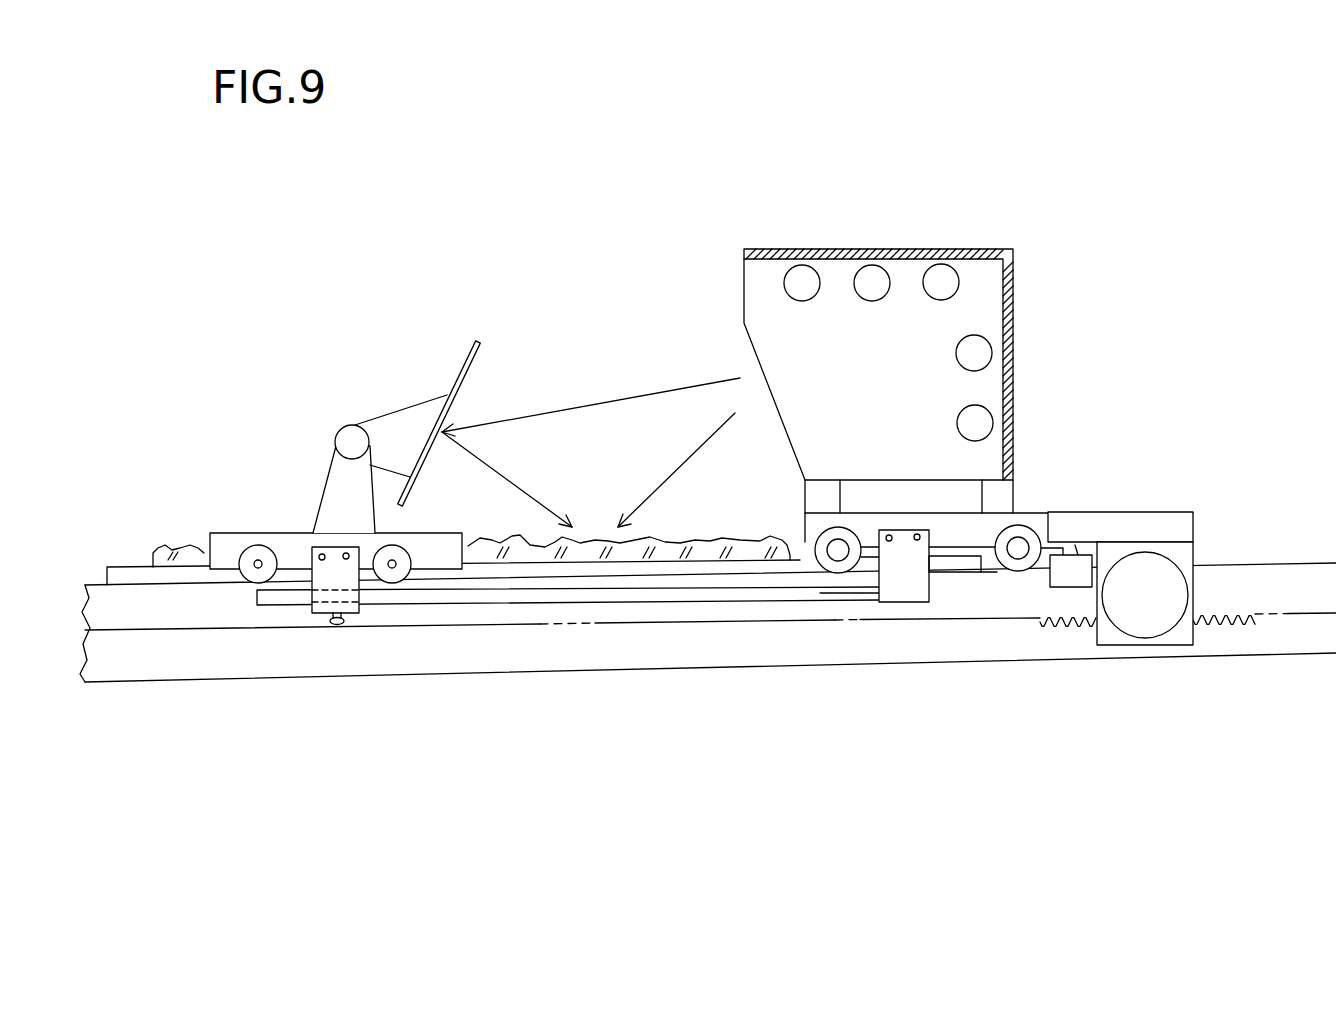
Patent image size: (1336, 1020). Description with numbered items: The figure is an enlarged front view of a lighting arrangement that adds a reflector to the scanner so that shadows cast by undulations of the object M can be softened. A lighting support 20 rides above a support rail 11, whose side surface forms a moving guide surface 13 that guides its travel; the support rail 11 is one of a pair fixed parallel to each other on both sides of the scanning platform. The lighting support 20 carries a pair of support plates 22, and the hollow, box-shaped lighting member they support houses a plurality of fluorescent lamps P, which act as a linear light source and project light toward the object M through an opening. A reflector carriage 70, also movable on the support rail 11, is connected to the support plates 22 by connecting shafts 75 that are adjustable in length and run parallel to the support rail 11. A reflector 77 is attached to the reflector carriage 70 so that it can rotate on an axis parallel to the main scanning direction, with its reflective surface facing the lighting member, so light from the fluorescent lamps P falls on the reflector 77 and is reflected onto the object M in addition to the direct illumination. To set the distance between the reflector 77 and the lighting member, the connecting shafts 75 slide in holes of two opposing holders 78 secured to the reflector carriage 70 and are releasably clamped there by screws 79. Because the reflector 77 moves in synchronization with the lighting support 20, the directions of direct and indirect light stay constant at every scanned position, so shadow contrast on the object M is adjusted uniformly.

The support rail 11 is at (1295, 578).
The moving guide surface 13 is at (1273, 637).
The lighting support 20 is at (1013, 317).
The support plate 22 is at (1138, 523).
The reflector carriage 70 is at (210, 545).
The connecting shaft 75 is at (540, 595).
The reflector 77 is at (475, 365).
The holder 78 is at (323, 578).
The screw 79 is at (337, 625).
The object M is at (158, 550).
The fluorescent lamp P is at (957, 423).